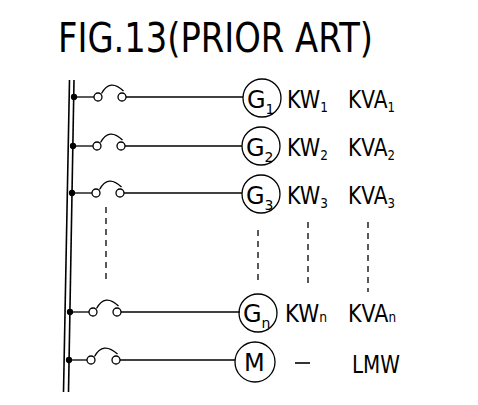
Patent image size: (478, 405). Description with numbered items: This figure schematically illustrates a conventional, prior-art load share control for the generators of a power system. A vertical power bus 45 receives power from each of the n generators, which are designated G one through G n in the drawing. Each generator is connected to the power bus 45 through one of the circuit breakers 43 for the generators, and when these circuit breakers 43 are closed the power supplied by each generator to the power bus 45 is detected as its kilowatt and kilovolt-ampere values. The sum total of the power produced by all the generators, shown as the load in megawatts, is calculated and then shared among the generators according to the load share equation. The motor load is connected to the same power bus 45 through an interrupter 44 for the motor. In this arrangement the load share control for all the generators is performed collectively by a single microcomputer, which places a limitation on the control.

The circuit breakers 43 is at (124, 91).
The interrupter 44 is at (118, 354).
The power bus 45 is at (66, 207).